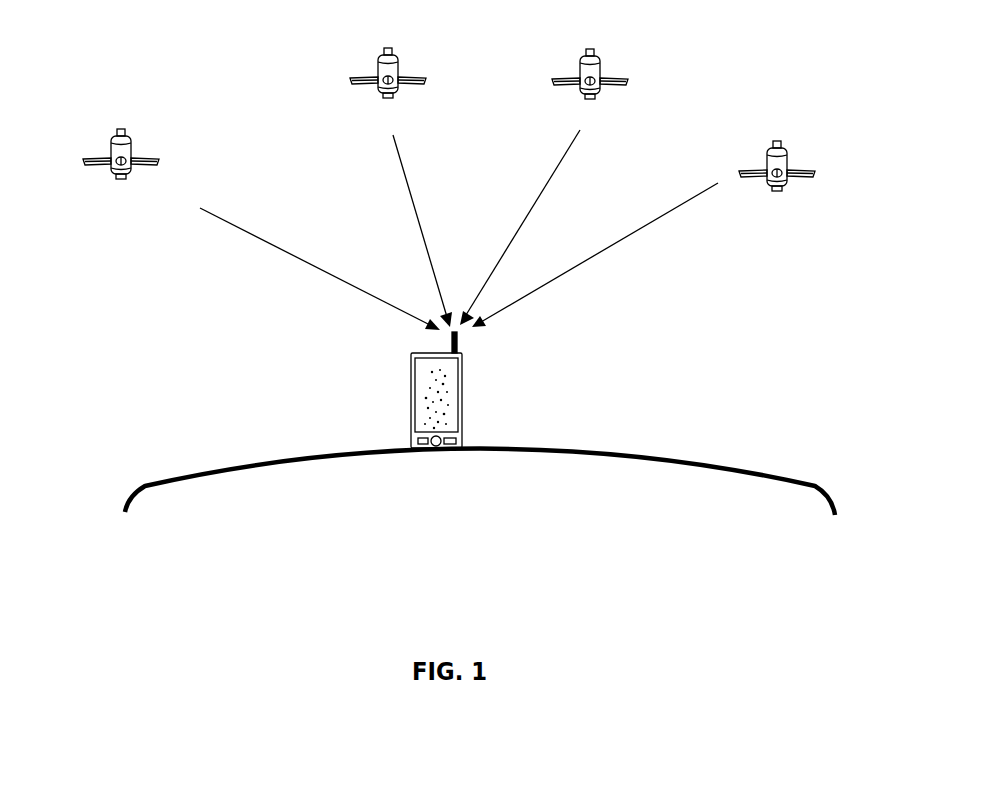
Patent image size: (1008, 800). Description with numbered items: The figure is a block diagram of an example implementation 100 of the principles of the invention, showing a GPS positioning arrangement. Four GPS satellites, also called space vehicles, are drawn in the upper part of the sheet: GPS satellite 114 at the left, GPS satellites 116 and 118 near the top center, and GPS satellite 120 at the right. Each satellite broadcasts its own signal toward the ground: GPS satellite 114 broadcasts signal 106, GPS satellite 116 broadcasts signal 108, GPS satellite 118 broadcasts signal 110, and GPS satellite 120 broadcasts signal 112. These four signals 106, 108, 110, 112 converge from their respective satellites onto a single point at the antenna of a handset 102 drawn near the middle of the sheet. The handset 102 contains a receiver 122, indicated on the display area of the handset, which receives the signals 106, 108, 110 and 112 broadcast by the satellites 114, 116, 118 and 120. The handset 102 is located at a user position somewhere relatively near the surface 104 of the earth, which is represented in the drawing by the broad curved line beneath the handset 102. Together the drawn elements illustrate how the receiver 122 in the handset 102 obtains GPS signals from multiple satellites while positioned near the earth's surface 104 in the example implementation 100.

The GPS positioning system 100 is at (705, 104).
The handset 102 is at (463, 406).
The surface of earth 104 is at (360, 458).
The signal 106 is at (304, 264).
The signal 108 is at (410, 192).
The signal 110 is at (536, 200).
The signal 112 is at (575, 266).
The GPS satellite 114 is at (120, 167).
The GPS satellite 116 is at (387, 87).
The GPS satellite 118 is at (589, 87).
The GPS satellite 120 is at (779, 179).
The receiver 122 is at (434, 386).